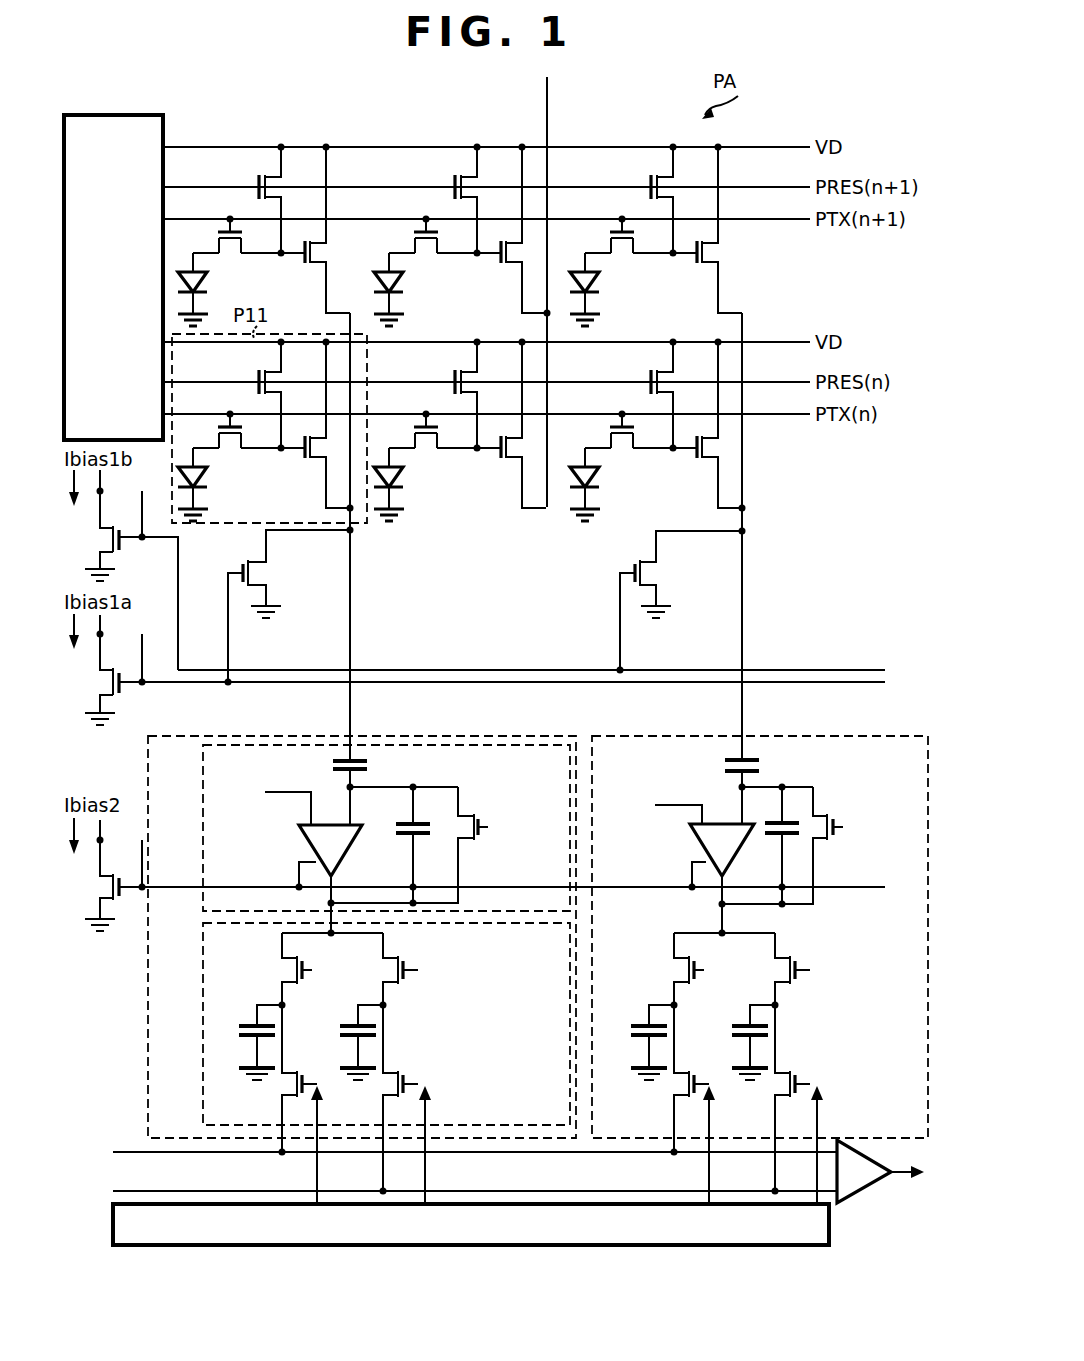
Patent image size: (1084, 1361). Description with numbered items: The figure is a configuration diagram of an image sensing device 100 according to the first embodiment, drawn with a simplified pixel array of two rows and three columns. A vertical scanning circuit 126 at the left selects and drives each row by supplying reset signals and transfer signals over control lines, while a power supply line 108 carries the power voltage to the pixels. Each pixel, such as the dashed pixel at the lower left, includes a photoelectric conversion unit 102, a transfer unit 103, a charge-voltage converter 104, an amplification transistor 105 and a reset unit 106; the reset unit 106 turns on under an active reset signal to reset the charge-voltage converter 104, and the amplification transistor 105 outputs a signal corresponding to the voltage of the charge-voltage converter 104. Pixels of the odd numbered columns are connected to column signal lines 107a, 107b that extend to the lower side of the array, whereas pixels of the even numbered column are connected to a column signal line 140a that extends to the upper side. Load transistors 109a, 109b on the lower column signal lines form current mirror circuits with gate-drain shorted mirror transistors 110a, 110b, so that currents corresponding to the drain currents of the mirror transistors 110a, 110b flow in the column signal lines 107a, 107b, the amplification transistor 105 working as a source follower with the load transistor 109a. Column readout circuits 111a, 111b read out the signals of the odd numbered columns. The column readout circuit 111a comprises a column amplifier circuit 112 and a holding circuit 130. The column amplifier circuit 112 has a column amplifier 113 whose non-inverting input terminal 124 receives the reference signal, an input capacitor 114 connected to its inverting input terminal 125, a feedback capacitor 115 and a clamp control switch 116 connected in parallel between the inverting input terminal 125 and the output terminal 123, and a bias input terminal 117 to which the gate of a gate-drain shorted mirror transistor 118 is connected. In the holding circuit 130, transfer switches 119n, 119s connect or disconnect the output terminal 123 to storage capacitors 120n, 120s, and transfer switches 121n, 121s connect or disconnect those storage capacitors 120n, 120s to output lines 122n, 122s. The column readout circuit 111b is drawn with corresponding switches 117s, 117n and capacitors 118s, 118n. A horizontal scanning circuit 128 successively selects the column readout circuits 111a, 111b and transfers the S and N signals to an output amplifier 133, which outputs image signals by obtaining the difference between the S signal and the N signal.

The image sensing device 100 is at (128, 1262).
The photoelectric conversion unit 102 is at (221, 488).
The transfer unit 103 is at (236, 451).
The charge-voltage converter 104 is at (252, 484).
The amplification transistor 105 is at (314, 424).
The reset unit 106 is at (234, 394).
The column signal line 107a is at (364, 607).
The column signal line 107b is at (756, 607).
The power supply line 108 is at (222, 343).
The load transistor 109a is at (240, 570).
The load transistor 109b is at (632, 570).
The mirror transistor 110a is at (133, 701).
The mirror transistor 110b is at (133, 557).
The column readout circuit 111a is at (368, 945).
The column readout circuit 111b is at (765, 945).
The column amplifier circuit 112 is at (202, 782).
The column amplifier 113 is at (307, 846).
The input capacitor 114 is at (368, 764).
The feedback capacitor 115 is at (424, 838).
The clamp control switch 116 is at (481, 813).
The bias input terminal 117 is at (296, 875).
The mirror transistor 118 is at (126, 902).
The transfer switch 119s is at (292, 970).
The transfer switch 119n is at (402, 964).
The storage capacitor 120s is at (245, 1019).
The storage capacitor 120n is at (345, 1019).
The transfer switch 121s is at (292, 1088).
The transfer switch 121n is at (394, 1088).
The output line 122s is at (462, 1161).
The output line 122n is at (592, 1187).
The signal transfer switch 117s is at (684, 970).
The noise transfer switch 117n is at (794, 964).
The signal holding capacitor 118s is at (637, 1019).
The noise holding capacitor 118n is at (737, 1019).
The output terminal 123 is at (346, 875).
The non-inverting input terminal 124 is at (298, 822).
The inverting input terminal 125 is at (347, 814).
The vertical scanning circuit 126 is at (116, 115).
The horizontal scanning circuit 128 is at (808, 1246).
The holding circuit 130 is at (202, 971).
The output amplifier 133 is at (866, 1190).
The column signal line 140a is at (560, 94).